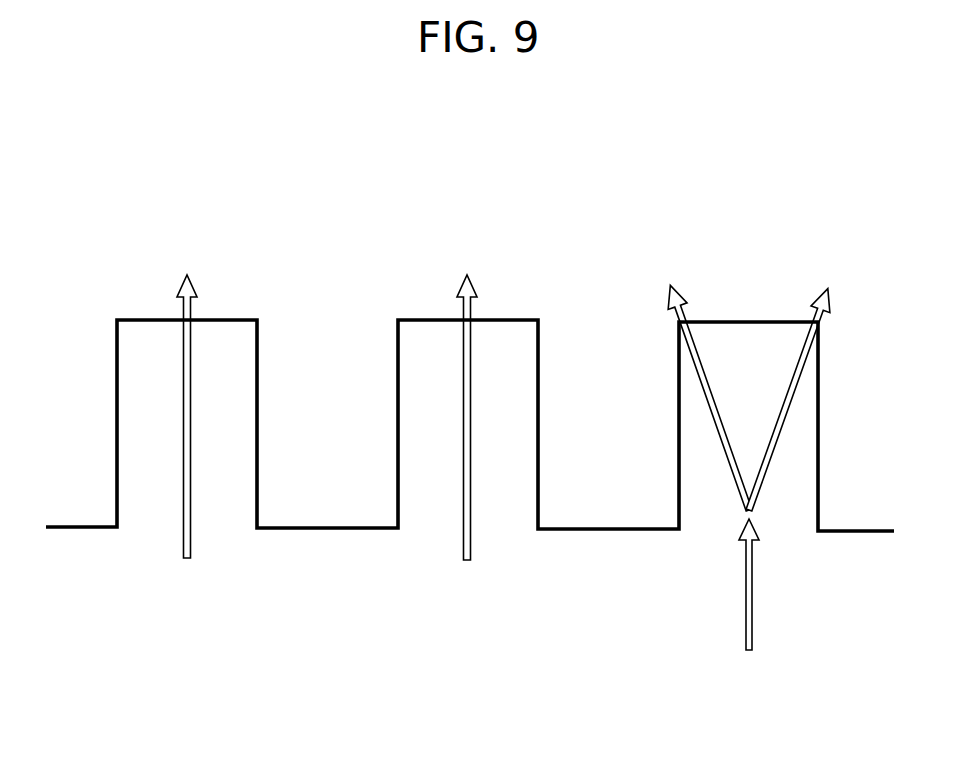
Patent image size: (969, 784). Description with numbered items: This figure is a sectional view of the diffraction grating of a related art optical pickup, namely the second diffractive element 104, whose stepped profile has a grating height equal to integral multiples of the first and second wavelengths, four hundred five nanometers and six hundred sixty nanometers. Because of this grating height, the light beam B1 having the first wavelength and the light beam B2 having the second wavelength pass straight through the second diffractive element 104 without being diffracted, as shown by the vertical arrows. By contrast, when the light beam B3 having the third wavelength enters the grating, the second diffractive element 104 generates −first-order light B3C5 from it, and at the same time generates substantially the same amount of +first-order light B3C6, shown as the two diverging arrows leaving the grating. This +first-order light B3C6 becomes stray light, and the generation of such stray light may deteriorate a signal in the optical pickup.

The second diffractive element 104 is at (69, 553).
The light beam having the first wavelength B1 is at (191, 544).
The light beam having the second wavelength B2 is at (471, 548).
The light beam having the third wavelength B3 is at (752, 598).
The −first-order light B3C5 is at (668, 300).
The +first-order light B3C6 is at (827, 300).